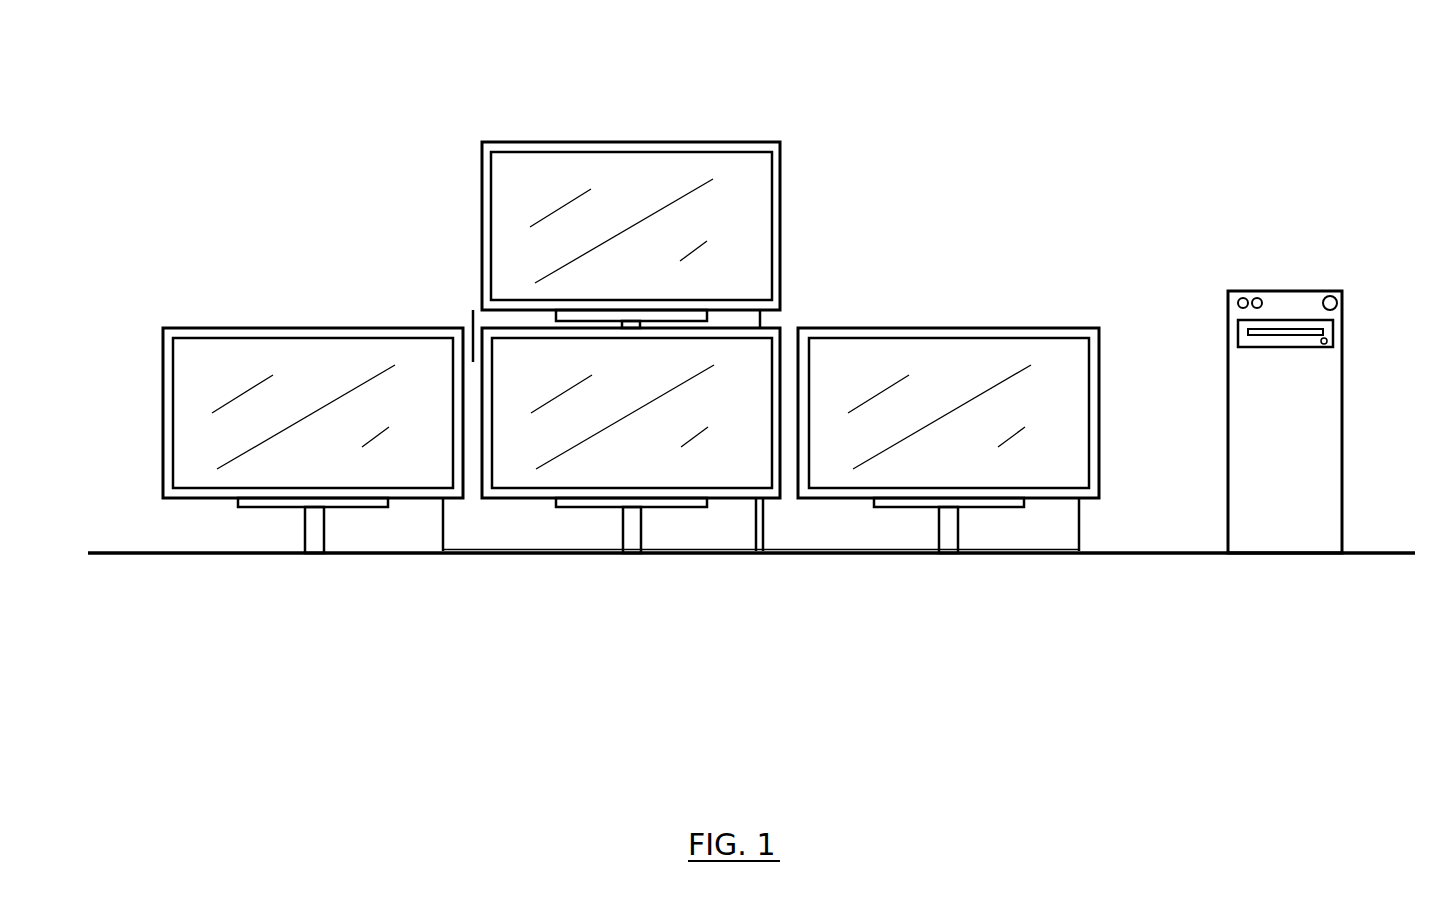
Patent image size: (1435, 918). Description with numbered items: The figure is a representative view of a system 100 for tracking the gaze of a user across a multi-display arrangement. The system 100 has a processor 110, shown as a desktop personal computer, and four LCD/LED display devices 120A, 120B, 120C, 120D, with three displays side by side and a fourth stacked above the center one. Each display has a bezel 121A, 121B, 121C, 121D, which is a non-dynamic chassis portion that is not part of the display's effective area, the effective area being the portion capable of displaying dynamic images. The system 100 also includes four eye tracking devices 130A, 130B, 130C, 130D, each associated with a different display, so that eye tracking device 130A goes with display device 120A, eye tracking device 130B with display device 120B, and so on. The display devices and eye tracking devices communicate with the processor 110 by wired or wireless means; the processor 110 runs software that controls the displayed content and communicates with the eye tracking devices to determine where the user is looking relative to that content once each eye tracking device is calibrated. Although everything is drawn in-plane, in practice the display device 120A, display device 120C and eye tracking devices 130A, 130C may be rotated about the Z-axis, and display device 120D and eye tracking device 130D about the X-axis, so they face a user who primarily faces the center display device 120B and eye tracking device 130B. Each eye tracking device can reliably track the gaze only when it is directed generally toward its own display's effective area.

The system 100 is at (289, 117).
The processor 110 is at (1228, 293).
The display device 120A is at (165, 328).
The display device 120B is at (785, 328).
The display device 120C is at (935, 328).
The display device 120D is at (781, 142).
The bezel 121A is at (245, 338).
The bezel 121B is at (497, 492).
The bezel 121C is at (817, 492).
The bezel 121D is at (620, 150).
The eye tracking device 130A is at (278, 507).
The eye tracking device 130B is at (612, 508).
The eye tracking device 130C is at (907, 508).
The eye tracking device 130D is at (553, 317).